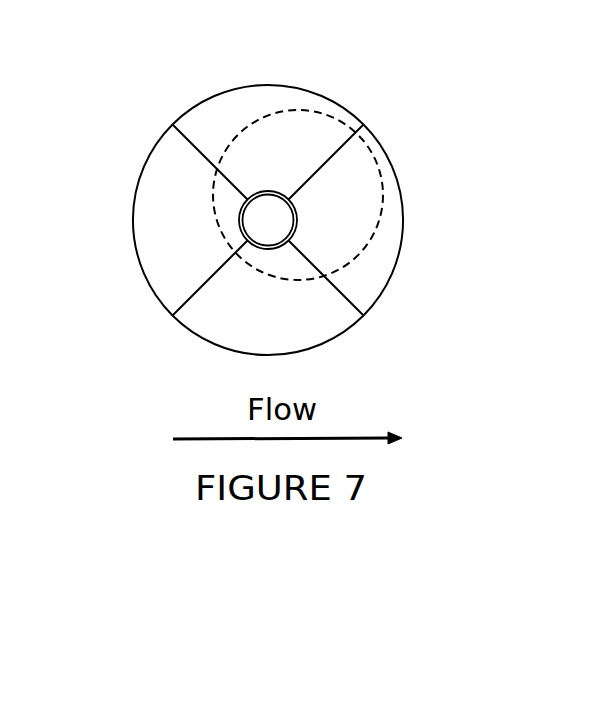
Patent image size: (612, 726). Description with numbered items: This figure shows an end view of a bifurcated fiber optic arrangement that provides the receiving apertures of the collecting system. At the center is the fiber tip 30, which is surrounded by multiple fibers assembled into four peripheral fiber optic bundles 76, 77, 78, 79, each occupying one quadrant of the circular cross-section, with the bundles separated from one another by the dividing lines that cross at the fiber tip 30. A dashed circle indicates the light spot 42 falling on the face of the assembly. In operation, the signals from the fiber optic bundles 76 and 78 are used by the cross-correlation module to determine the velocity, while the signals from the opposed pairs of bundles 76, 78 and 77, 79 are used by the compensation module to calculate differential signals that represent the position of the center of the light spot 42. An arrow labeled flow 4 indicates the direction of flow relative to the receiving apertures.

The fiber optic bundle 79 is at (213, 111).
The fiber optic bundle 78 is at (173, 188).
The fiber optic bundle 77 is at (250, 340).
The fiber optic bundle 76 is at (363, 282).
The light spot 42 is at (323, 117).
The fiber tip 30 is at (268, 225).
The flow direction arrow 4 is at (367, 437).